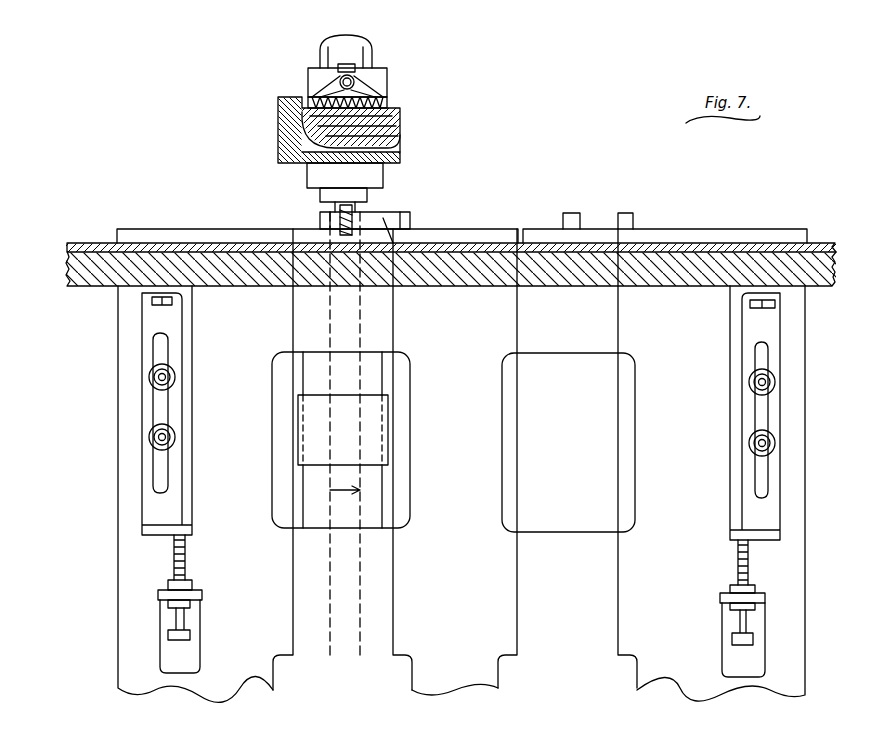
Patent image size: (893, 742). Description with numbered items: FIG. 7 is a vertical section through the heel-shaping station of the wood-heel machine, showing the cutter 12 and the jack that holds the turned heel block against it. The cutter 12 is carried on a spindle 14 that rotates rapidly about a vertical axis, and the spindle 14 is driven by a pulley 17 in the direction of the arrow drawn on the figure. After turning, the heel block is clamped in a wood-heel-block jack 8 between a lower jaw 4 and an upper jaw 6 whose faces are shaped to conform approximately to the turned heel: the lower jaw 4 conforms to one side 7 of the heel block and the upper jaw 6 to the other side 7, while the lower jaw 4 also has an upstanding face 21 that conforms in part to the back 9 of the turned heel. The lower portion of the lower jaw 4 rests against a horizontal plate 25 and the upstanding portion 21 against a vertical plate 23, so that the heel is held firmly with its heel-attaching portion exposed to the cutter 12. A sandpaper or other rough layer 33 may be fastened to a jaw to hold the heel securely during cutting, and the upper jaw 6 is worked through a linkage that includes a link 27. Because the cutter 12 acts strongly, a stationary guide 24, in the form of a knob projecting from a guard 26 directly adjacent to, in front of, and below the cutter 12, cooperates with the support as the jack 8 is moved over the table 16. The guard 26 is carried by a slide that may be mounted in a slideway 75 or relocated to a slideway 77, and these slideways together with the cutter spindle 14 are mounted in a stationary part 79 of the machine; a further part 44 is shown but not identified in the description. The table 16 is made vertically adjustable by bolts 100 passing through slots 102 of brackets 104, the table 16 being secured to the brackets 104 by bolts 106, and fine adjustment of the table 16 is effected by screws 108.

The lower jaw 4 is at (398, 155).
The upper jaw 6 is at (387, 103).
The side of the turned heel 7 is at (360, 95).
The wood-heel-block jack 8 is at (268, 174).
The back of the turned heel 9 is at (280, 125).
The cutter 12 is at (310, 90).
The spindle 14 is at (334, 210).
The table 16 is at (683, 267).
The pulley 17 is at (370, 428).
The upstanding face 21 is at (298, 95).
The vertical plate 23 is at (280, 132).
The stationary guide 24 is at (338, 222).
The horizontal plate 25 is at (317, 165).
The guard 26 is at (423, 288).
The link 27 is at (348, 66).
The rough layer 33 is at (387, 140).
The plate 44 is at (493, 243).
The slideway 75 is at (412, 218).
The slideway 77 is at (628, 217).
The stationary part of the machine 79 is at (713, 236).
The bolts 100 is at (148, 437).
The slots 102 is at (160, 482).
The brackets 104 is at (155, 327).
The bolts 106 is at (150, 302).
The screws 108 is at (186, 565).